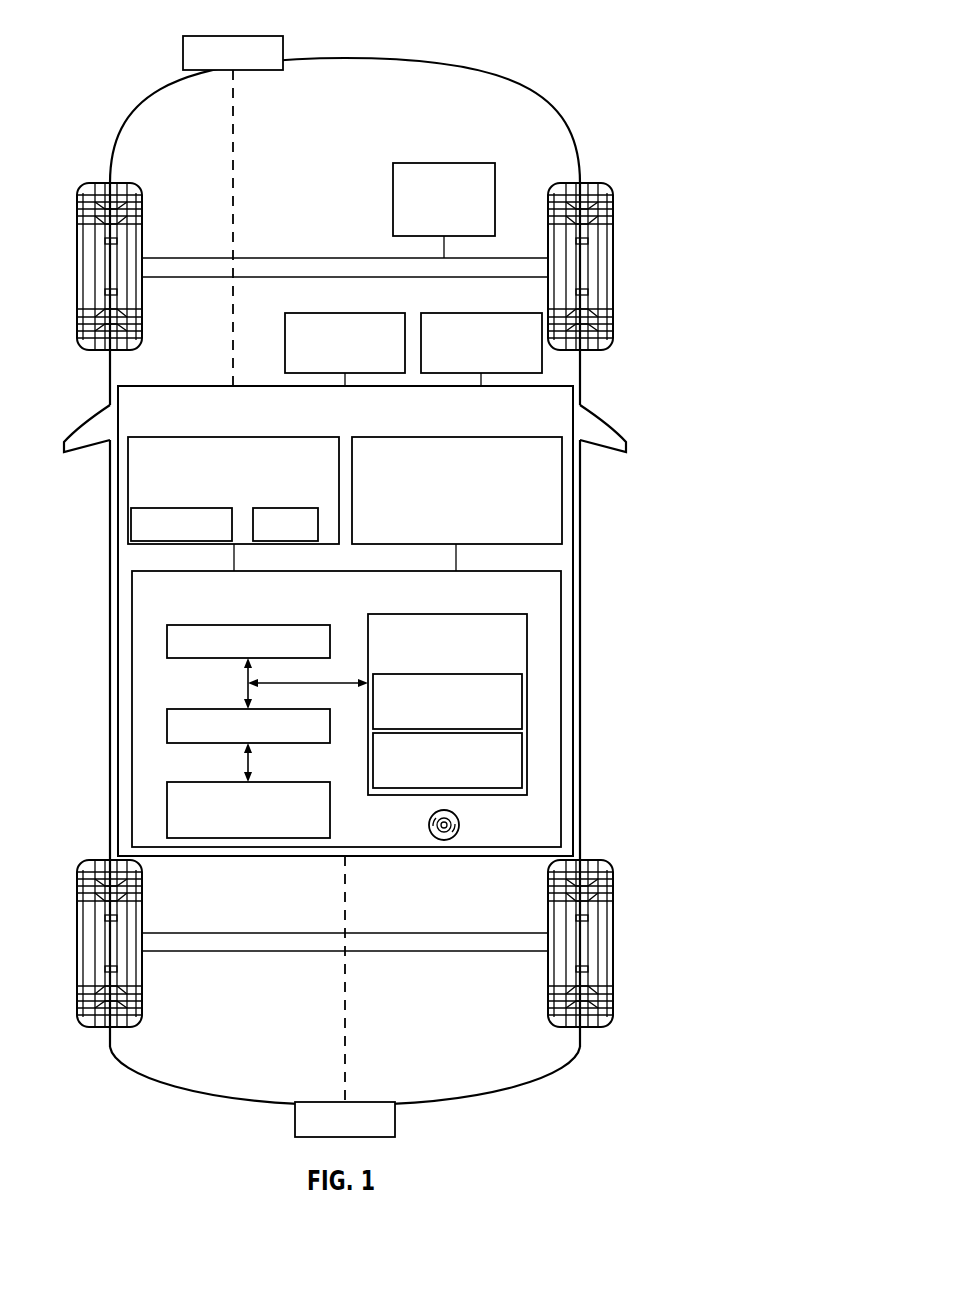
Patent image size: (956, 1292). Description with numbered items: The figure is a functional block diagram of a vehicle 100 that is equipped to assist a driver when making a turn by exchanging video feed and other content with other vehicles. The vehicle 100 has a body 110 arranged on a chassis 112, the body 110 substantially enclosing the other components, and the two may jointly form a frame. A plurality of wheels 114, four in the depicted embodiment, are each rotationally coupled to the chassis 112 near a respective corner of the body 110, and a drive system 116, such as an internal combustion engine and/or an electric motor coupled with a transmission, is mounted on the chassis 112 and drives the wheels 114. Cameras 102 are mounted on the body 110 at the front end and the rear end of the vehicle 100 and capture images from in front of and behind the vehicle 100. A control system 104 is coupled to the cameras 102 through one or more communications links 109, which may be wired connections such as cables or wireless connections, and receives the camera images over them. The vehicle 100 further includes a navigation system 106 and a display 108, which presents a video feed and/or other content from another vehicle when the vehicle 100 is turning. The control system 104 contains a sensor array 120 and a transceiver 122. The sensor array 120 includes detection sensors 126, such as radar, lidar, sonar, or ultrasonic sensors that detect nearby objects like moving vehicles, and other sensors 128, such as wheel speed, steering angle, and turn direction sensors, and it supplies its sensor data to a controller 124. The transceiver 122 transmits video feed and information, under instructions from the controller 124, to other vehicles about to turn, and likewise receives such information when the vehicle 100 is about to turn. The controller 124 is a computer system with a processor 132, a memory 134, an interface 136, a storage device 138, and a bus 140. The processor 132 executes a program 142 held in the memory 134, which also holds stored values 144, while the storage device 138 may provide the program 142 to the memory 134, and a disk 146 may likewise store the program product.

The vehicle 100 is at (499, 40).
The cameras 102 is at (212, 34).
The control system 104 is at (207, 384).
The navigation system 106 is at (482, 311).
The display 108 is at (327, 312).
The communications link 109 is at (233, 137).
The body 110 is at (112, 640).
The chassis 112 is at (202, 230).
The wheels 114 is at (95, 183).
The drive system 116 is at (445, 160).
The sensor array 120 is at (195, 437).
The transceiver 122 is at (492, 436).
The controller 124 is at (482, 571).
The detection sensors 126 is at (190, 507).
The other sensors 128 is at (268, 507).
The processor 132 is at (207, 624).
The memory 134 is at (528, 627).
The interface 136 is at (165, 724).
The storage device 138 is at (165, 810).
The bus 140 is at (243, 675).
The program 142 is at (523, 698).
The stored values 144 is at (523, 762).
The disk 146 is at (460, 825).